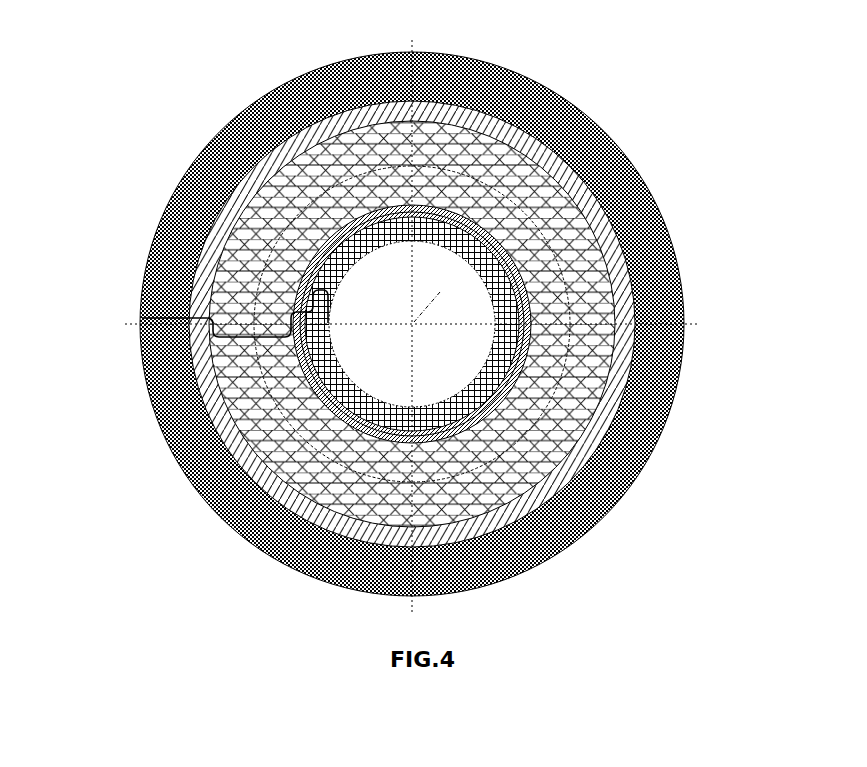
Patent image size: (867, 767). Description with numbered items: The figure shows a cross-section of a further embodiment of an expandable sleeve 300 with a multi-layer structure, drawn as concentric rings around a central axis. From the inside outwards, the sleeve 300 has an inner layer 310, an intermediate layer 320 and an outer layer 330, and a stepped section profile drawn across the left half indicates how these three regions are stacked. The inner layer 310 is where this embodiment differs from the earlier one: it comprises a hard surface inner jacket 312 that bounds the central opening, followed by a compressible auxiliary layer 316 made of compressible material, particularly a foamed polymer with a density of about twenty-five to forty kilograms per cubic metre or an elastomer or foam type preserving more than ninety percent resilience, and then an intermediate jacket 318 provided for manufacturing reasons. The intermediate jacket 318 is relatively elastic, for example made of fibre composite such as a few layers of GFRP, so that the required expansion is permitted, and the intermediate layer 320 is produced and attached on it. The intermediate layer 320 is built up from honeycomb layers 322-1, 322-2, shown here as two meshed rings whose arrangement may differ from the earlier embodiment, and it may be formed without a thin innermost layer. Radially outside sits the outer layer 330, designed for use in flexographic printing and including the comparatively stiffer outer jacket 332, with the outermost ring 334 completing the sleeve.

The sleeve 300 is at (415, 309).
The inner layer 310 is at (322, 290).
The inner jacket 312 is at (468, 392).
The auxiliary layer 316 is at (467, 233).
The intermediate jacket 318 is at (497, 245).
The intermediate layer 320 is at (250, 337).
The first honeycomb layer 322-1 is at (547, 313).
The second honeycomb layer 322-2 is at (587, 368).
The outer layer 330 is at (142, 318).
The outer jacket 332 is at (583, 450).
The outermost layer 334 is at (587, 512).